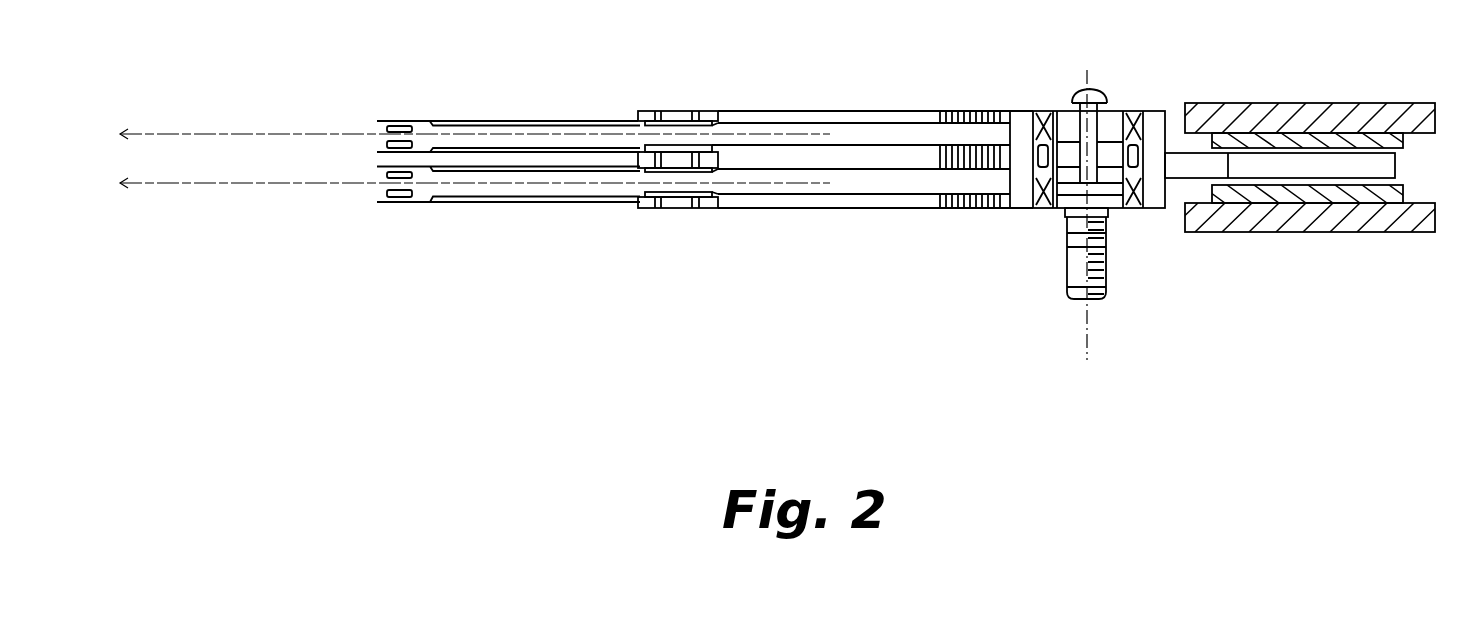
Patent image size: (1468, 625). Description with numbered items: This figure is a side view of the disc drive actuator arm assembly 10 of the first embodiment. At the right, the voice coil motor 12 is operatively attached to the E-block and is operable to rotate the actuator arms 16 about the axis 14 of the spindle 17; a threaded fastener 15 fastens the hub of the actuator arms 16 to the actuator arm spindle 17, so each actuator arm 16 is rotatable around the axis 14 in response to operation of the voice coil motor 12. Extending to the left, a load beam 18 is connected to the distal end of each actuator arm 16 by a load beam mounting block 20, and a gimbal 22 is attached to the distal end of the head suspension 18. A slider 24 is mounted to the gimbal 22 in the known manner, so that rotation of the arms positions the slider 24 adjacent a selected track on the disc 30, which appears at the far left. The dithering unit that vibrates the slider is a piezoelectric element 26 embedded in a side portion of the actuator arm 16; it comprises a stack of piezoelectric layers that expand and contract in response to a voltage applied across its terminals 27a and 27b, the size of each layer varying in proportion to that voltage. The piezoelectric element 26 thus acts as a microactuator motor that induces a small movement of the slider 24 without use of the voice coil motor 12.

The wire tensioning device 10 is at (898, 270).
The voice coil motor 12 is at (1307, 103).
The axis 14 is at (1082, 258).
The threaded fastener 15 is at (1100, 92).
The actuator arm 16 is at (836, 106).
The spindle 17 is at (1072, 252).
The load beam 18 is at (574, 117).
The load beam mounting block 20 is at (684, 120).
The gimbal 22 is at (417, 120).
The slider 24 is at (385, 128).
The piezoelectric element 26 is at (970, 108).
The terminal 27a is at (948, 108).
The terminal 27b is at (1000, 108).
The disc 30 is at (262, 185).